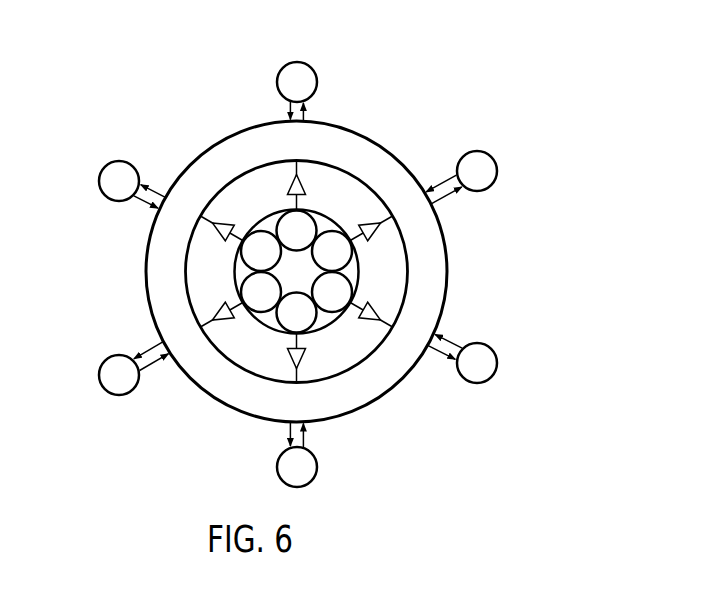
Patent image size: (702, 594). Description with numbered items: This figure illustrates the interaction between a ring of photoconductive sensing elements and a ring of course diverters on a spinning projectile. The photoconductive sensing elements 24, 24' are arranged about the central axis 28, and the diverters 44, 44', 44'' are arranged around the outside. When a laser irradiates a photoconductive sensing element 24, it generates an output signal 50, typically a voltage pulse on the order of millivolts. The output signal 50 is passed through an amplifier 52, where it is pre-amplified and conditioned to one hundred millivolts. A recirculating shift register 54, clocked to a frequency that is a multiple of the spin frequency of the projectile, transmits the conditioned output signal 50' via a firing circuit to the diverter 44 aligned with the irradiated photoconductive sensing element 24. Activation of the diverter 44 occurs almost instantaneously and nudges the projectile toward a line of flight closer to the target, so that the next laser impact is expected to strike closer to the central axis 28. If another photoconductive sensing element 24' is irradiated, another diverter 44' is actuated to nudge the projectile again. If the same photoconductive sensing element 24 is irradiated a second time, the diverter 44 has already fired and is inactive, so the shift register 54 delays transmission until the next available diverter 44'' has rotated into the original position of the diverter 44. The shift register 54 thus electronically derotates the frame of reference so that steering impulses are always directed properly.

The recirculating shift register 54 is at (451, 252).
The central axis 28 is at (296, 272).
The photoconductive sensing element 24 is at (273, 323).
The photoconductive sensing element 24' is at (309, 211).
The output signal 50 is at (328, 356).
The conditioned output signal 50' is at (253, 462).
The amplifier 52 is at (282, 362).
The diverter 44 is at (333, 456).
The diverter 44' is at (322, 67).
The next available diverter 44'' is at (506, 358).